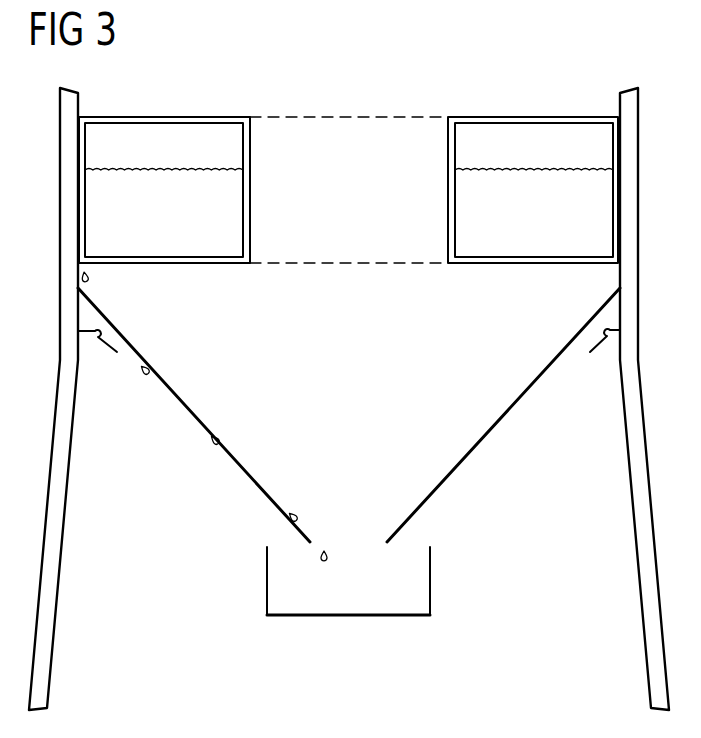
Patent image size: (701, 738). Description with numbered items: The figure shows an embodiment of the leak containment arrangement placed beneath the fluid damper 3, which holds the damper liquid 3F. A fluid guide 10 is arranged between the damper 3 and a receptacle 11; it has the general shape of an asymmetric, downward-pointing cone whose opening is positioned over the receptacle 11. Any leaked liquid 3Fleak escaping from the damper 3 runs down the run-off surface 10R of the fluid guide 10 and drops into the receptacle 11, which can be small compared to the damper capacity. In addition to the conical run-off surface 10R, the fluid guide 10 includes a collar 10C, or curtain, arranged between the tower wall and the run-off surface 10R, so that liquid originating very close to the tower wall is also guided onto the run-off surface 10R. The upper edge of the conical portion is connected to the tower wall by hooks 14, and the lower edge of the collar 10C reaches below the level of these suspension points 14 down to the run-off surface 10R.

The fluid damper 3 is at (262, 98).
The damper liquid 3F is at (163, 190).
The leaked liquid 3Fleak is at (90, 280).
The fluid guide 10 is at (349, 415).
The collar 10C is at (603, 307).
The run-off surface 10R is at (489, 435).
The hooks 14 is at (87, 335).
The receptacle 11 is at (267, 575).